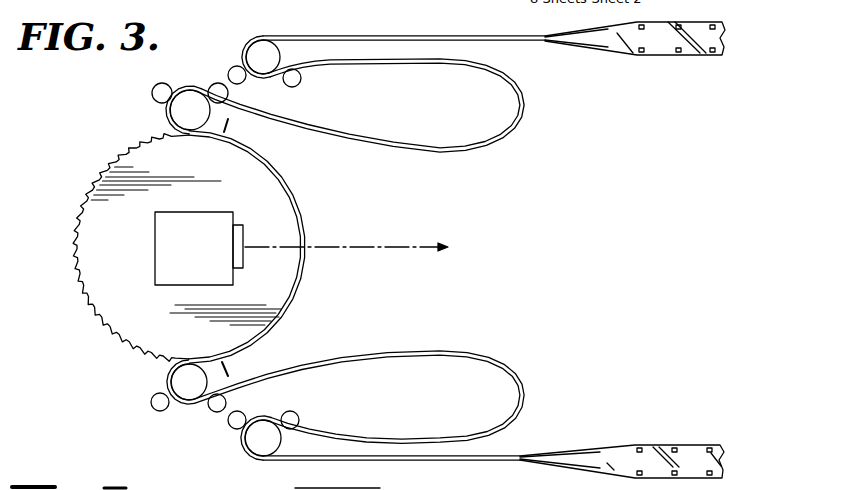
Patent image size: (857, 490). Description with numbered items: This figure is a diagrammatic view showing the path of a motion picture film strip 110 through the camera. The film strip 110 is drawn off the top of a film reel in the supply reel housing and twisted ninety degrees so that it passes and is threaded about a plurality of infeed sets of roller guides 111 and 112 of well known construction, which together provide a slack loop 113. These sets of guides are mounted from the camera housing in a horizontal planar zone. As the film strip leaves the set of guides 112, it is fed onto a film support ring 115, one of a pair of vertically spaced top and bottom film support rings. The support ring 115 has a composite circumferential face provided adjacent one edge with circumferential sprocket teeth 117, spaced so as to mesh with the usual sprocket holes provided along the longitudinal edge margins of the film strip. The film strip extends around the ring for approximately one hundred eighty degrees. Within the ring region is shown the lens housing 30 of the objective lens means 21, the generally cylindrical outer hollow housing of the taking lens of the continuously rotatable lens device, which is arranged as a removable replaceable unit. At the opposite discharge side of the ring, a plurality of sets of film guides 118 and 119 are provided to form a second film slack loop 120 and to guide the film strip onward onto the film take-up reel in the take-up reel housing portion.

The film guide 119 is at (240, 53).
The film slack loop 120 is at (524, 118).
The film guide 118 is at (152, 104).
The top film support ring 115 is at (163, 250).
The circumferential sprocket teeth 117 is at (146, 355).
The lens housing 30 is at (223, 216).
The objective lens means 21 is at (250, 238).
The roller guide set 112 is at (181, 408).
The slack loop 113 is at (512, 362).
The roller guide set 111 is at (236, 436).
The motion picture film strip 110 is at (655, 445).